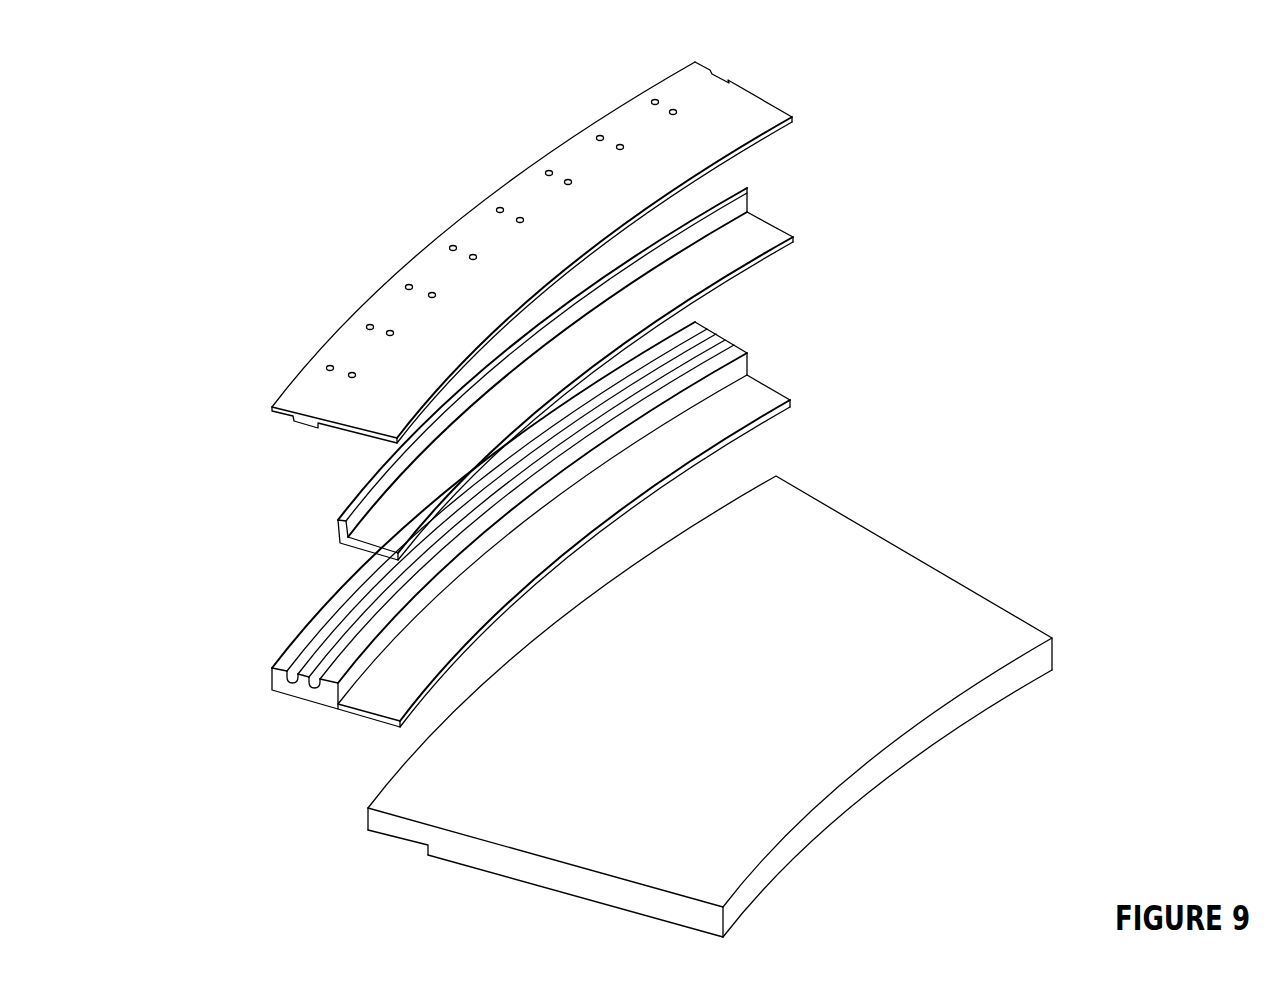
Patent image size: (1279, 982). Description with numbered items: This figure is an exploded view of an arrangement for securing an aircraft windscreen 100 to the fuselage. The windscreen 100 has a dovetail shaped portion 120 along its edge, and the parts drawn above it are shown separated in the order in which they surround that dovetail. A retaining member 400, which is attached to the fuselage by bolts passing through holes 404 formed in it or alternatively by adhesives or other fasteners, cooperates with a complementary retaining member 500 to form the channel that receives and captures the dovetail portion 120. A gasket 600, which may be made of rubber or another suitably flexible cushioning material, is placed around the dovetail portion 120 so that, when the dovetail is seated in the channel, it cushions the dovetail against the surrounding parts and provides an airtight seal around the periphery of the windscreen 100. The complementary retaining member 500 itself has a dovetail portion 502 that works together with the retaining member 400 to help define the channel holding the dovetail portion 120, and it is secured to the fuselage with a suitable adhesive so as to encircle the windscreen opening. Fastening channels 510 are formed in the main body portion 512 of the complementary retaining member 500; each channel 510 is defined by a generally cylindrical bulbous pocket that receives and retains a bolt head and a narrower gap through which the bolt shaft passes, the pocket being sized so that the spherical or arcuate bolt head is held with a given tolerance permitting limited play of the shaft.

The windscreen 100 is at (970, 588).
The dovetail shaped portion 120 is at (393, 840).
The retaining member 400 is at (773, 102).
The holes 404 is at (432, 295).
The complementary retaining member 500 is at (330, 598).
The dovetail portion 502 is at (370, 722).
The fastening channels 510 is at (290, 682).
The main body portion 512 is at (297, 697).
The gasket 600 is at (775, 223).